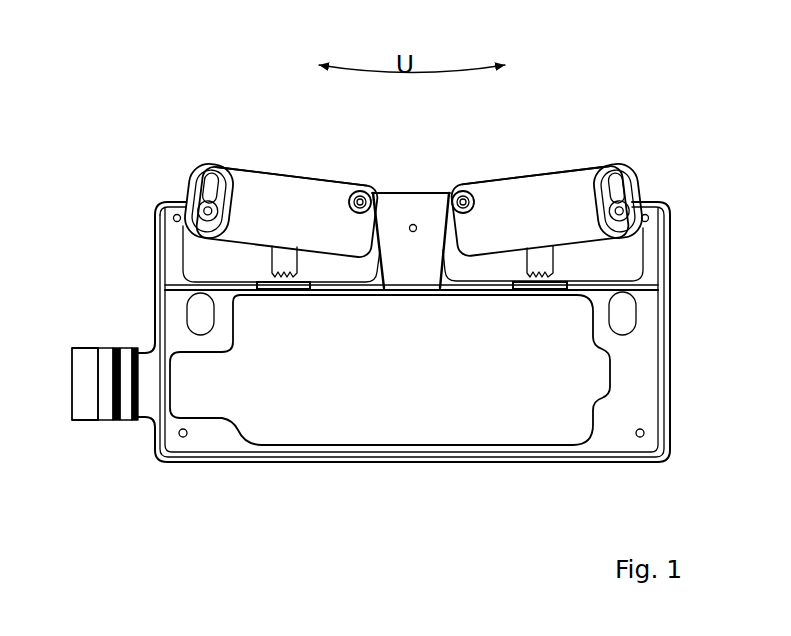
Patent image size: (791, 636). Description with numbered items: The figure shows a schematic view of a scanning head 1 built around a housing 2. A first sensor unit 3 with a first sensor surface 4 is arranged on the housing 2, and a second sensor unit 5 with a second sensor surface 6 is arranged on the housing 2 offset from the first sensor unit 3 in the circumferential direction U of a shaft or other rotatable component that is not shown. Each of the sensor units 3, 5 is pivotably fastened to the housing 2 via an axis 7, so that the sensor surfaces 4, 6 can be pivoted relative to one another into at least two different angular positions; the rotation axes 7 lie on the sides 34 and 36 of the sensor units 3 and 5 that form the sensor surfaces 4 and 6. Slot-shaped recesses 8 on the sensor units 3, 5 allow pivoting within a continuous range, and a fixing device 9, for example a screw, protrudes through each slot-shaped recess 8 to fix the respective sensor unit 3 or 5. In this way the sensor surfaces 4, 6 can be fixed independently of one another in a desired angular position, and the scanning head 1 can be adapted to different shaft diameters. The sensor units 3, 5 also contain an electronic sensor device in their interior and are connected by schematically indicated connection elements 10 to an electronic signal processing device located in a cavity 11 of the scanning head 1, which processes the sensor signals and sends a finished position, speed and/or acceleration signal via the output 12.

The scanning head 1 is at (676, 241).
The housing 2 is at (613, 413).
The first sensor unit 3 is at (253, 242).
The first sensor surface 4 is at (291, 171).
The second sensor unit 5 is at (547, 217).
The second sensor surface 6 is at (527, 172).
The axis 7 is at (360, 191).
The slot-shaped recess 8 is at (222, 165).
The fixing device 9 is at (176, 216).
The connection element 10 is at (258, 283).
The cavity 11 is at (402, 405).
The output 12 is at (100, 421).
The side of the first sensor unit 34 is at (321, 172).
The side of the second sensor unit 36 is at (558, 170).